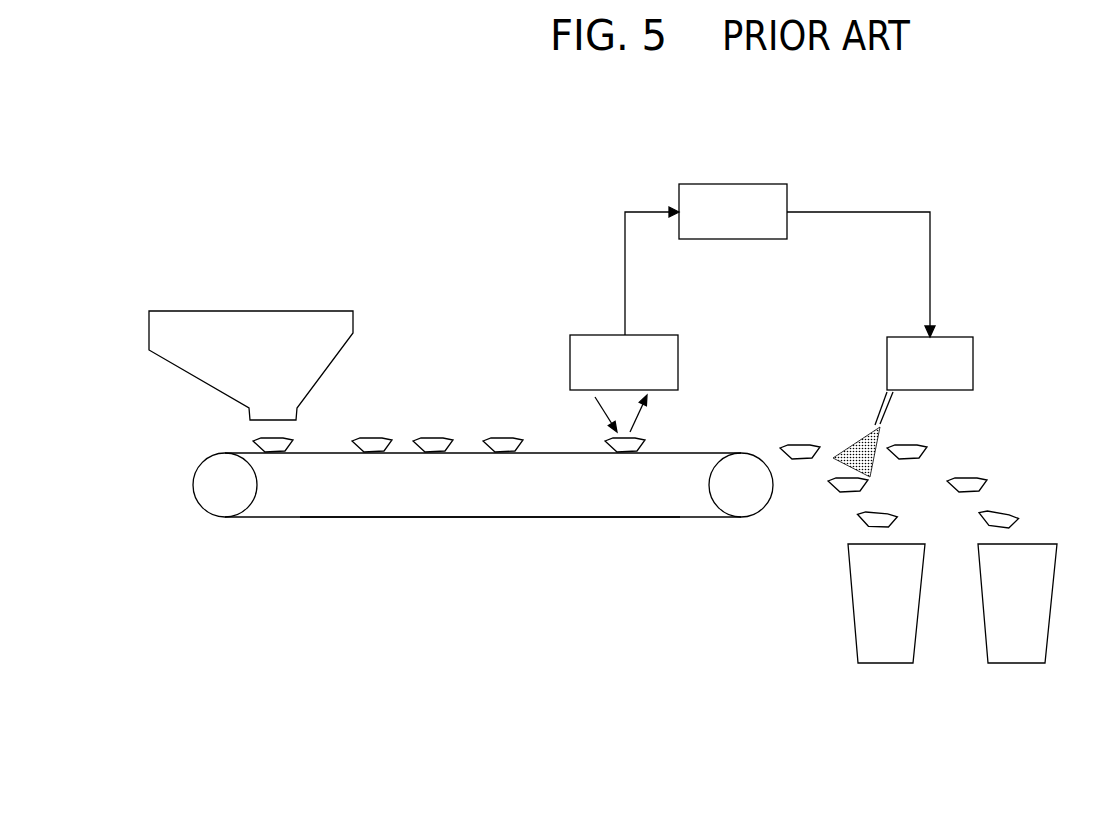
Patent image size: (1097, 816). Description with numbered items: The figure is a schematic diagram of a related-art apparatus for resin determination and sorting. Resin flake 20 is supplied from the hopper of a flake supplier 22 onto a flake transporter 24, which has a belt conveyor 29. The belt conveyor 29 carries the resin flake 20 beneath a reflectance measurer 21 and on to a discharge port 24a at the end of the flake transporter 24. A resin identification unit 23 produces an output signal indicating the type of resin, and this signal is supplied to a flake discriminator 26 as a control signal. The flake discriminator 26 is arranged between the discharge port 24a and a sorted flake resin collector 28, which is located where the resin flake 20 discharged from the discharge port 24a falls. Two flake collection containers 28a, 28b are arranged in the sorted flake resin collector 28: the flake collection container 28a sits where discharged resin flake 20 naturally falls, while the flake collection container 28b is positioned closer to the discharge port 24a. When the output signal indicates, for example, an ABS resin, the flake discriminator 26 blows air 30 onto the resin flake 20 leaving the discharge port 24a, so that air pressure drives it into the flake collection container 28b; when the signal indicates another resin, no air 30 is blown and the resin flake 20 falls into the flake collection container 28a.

The resin flake 20 is at (296, 443).
The reflectance measurer 21 is at (600, 335).
The flake supplier 22 is at (353, 317).
The resin identification unit 23 is at (753, 184).
The flake transporter 24 is at (483, 482).
The discharge port 24a is at (747, 453).
The flake discriminator 26 is at (953, 337).
The sorted flake resin collector 28 is at (944, 649).
The flake collection container 28a is at (1012, 664).
The flake collection container 28b is at (880, 664).
The belt conveyor 29 is at (490, 516).
The air 30 is at (860, 430).